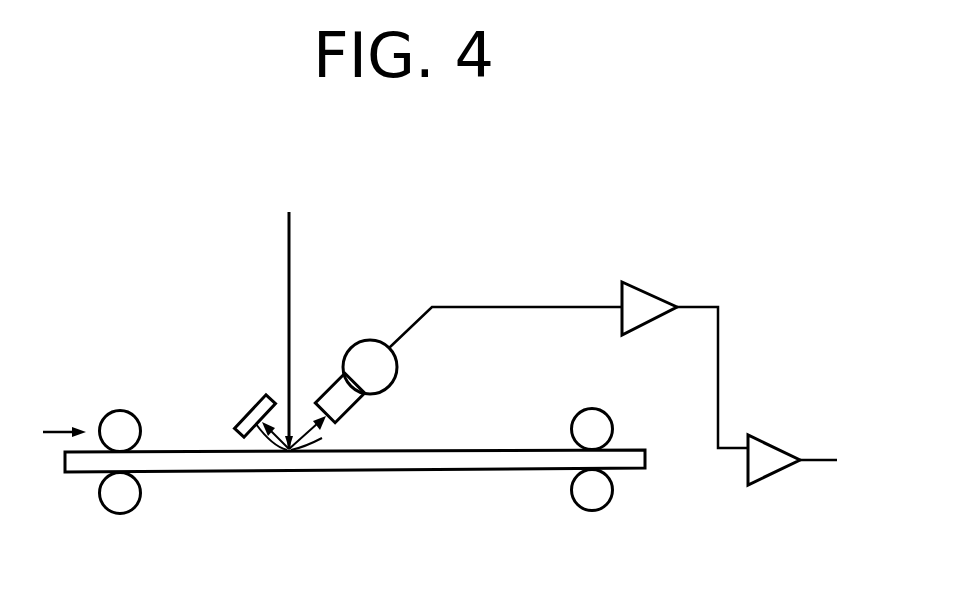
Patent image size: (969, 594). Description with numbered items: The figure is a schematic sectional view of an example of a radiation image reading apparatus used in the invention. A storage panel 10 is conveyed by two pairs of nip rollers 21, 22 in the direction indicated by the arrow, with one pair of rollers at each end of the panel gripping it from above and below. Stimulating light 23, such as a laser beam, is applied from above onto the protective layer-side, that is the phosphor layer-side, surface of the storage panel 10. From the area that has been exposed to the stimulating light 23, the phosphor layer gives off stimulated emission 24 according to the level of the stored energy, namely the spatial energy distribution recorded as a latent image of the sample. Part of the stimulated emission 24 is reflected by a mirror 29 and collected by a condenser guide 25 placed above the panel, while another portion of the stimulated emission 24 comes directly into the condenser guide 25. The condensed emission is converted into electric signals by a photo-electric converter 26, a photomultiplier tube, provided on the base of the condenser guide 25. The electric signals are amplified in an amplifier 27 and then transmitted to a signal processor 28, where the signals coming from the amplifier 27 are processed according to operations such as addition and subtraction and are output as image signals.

The storage panel 10 is at (65, 458).
The nip rollers 21 is at (118, 410).
The nip rollers 22 is at (592, 407).
The stimulating light 23 is at (291, 237).
The stimulated emission 24 is at (264, 448).
The condenser guide 25 is at (335, 388).
The photo-electric converter 26 is at (365, 341).
The amplifier 27 is at (647, 297).
The signal processor 28 is at (765, 440).
The mirror 29 is at (248, 405).